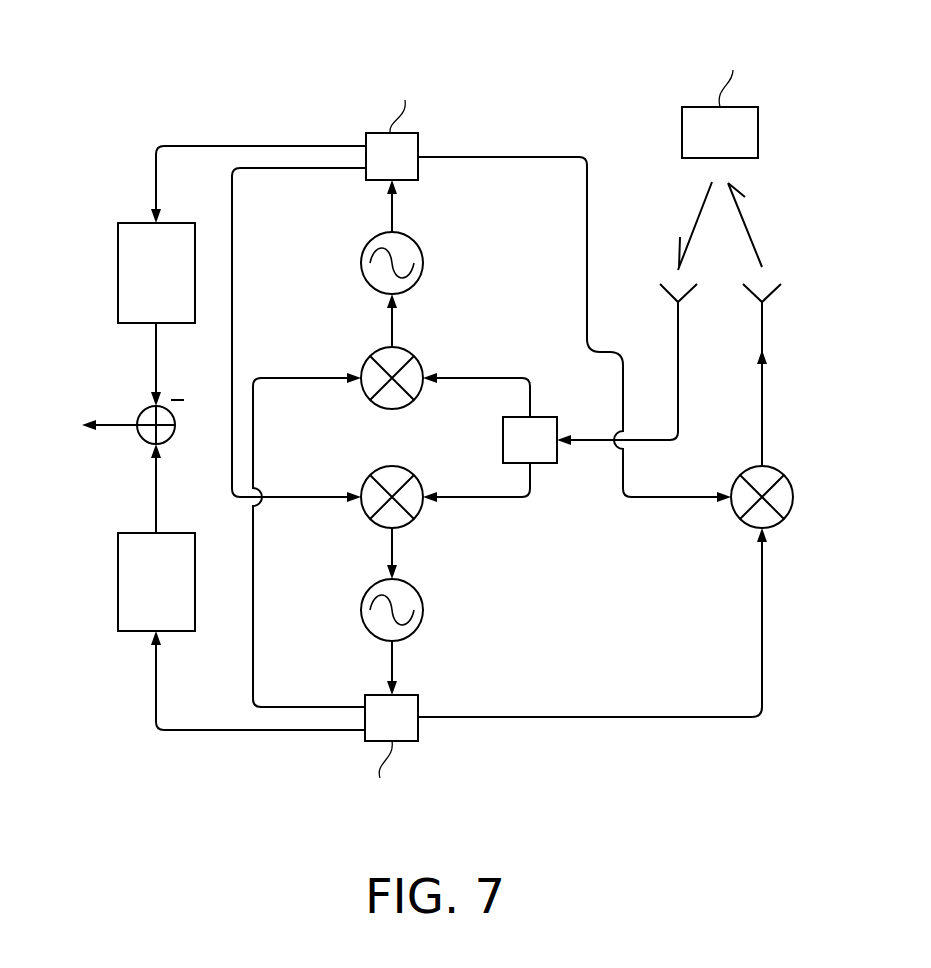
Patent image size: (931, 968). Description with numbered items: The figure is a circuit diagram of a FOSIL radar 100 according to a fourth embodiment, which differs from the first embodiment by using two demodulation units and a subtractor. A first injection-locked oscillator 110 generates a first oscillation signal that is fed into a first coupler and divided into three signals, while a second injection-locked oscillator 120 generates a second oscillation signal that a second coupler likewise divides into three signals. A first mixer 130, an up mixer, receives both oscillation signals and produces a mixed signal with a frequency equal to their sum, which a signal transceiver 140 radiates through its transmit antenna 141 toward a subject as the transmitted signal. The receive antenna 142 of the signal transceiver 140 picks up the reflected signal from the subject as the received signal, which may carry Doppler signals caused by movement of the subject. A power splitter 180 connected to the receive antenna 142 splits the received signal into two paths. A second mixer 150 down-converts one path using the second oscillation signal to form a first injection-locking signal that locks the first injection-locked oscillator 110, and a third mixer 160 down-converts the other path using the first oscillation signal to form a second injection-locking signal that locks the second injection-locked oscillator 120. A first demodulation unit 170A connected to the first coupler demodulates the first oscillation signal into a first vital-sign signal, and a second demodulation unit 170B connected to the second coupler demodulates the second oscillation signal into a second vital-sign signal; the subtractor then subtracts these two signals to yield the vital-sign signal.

The FOSIL radar 100 is at (112, 72).
The first injection-locked oscillator 110 is at (427, 263).
The second injection-locked oscillator 120 is at (425, 612).
The first mixer 130 is at (752, 527).
The signal transceiver 140 is at (744, 329).
The transmit antenna 141 is at (777, 300).
The receive antenna 142 is at (657, 300).
The second mixer 150 is at (382, 345).
The third mixer 160 is at (358, 512).
The first demodulation unit 170A is at (127, 223).
The second demodulation unit 170B is at (135, 631).
The power splitter 180 is at (547, 463).